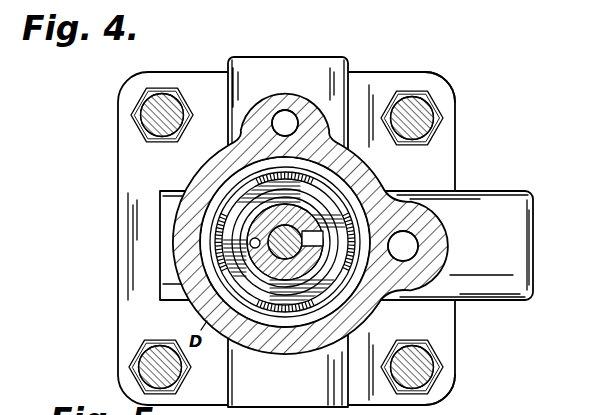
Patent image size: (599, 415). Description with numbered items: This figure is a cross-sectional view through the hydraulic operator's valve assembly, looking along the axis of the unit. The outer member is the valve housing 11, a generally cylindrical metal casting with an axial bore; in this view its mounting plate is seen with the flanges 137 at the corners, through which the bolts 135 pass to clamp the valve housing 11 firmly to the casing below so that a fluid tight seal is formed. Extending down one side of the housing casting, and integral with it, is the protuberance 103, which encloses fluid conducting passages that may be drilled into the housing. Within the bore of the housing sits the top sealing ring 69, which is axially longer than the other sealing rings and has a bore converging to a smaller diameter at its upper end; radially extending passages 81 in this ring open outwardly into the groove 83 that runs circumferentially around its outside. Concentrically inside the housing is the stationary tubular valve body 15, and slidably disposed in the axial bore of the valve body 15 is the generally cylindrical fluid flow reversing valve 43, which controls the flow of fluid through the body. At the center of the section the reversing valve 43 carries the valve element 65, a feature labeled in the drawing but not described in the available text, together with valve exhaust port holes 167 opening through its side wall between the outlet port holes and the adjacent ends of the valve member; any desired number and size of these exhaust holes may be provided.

The valve housing 11 is at (187, 312).
The valve body 15 is at (236, 178).
The fluid flow reversing valve 43 is at (235, 285).
The shaft hub 65 is at (258, 247).
The top sealing ring 69 is at (235, 190).
The radially extending passages 81 is at (286, 171).
The groove 83 is at (246, 197).
The protuberance 103 is at (502, 203).
The bolts 135 is at (405, 136).
The flanges 137 is at (441, 97).
The valve exhaust port holes 167 is at (322, 200).